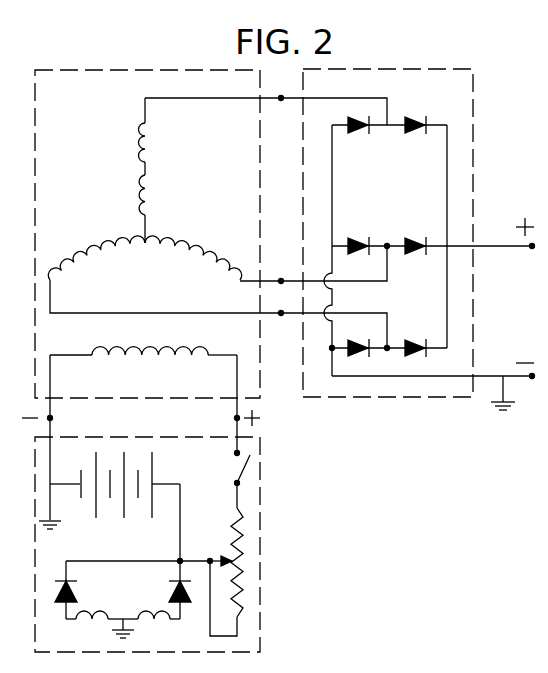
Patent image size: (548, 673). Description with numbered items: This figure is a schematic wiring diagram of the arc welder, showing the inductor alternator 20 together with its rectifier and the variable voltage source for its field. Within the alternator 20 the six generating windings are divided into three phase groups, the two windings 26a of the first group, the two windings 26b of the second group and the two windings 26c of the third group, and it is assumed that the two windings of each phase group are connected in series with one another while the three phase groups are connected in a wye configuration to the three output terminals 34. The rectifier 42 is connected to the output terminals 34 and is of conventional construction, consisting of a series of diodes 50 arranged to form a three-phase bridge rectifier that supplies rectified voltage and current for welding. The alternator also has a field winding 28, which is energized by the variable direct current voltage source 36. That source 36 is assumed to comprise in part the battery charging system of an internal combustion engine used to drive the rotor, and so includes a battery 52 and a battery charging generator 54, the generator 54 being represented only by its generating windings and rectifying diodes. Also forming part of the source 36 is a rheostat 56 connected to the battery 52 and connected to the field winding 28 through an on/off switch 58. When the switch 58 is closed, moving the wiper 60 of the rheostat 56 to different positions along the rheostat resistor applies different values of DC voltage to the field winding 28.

The inductor alternator 20 is at (125, 63).
The generating windings of first phase group 26a is at (139, 147).
The generating windings of second phase group 26b is at (68, 270).
The generating windings of third phase group 26c is at (217, 265).
The field winding 28 is at (176, 348).
The output terminals 34 is at (281, 100).
The variable direct current voltage source 36 is at (260, 498).
The rectifier 42 is at (370, 69).
The diodes 50 is at (352, 134).
The battery 52 is at (153, 472).
The battery charging generator 54 is at (123, 585).
The rheostat 56 is at (231, 559).
The on/off switch 58 is at (247, 463).
The wiper 60 is at (227, 558).